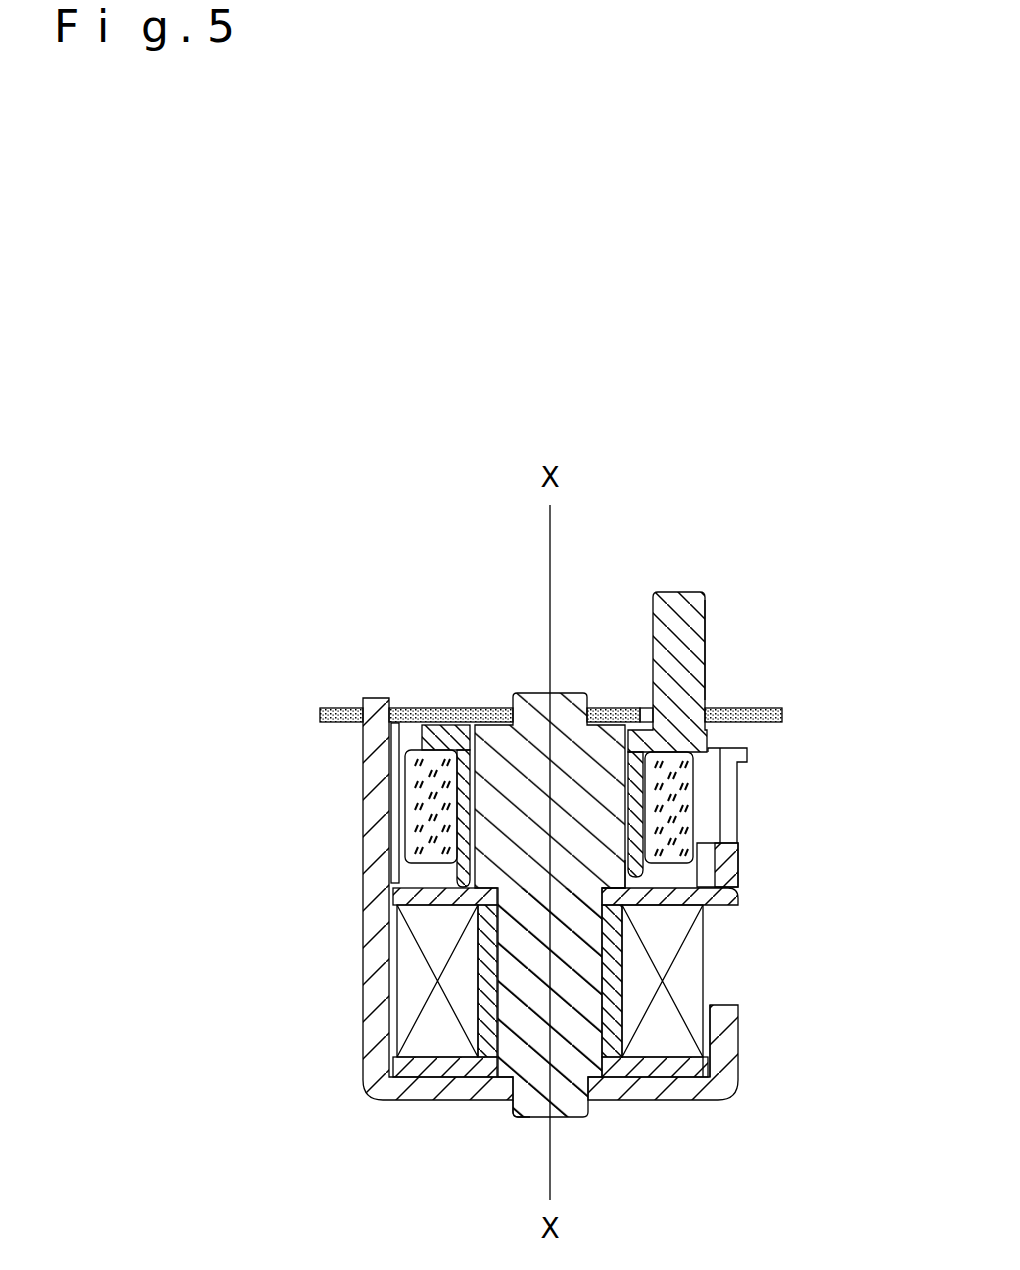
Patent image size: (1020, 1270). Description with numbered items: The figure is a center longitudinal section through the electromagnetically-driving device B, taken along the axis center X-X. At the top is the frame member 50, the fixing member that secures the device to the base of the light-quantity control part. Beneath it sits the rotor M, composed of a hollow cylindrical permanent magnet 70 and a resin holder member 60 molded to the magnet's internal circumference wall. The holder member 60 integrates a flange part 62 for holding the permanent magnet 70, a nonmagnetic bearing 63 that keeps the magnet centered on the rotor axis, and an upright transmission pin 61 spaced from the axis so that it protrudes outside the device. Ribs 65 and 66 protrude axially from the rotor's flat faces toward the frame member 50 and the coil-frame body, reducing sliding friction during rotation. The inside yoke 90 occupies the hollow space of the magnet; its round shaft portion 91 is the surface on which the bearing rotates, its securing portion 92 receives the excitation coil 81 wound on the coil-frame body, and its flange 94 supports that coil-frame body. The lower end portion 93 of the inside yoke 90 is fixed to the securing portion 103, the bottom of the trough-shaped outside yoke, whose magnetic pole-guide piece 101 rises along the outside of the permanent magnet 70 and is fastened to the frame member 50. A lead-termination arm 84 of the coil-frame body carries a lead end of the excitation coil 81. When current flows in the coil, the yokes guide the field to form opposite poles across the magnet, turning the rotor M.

The frame member 50 is at (330, 706).
The holder member 60 is at (688, 592).
The transmission pin 61 is at (694, 655).
The flange part 62 is at (425, 730).
The bearing 63 is at (455, 786).
The rib 65 is at (443, 728).
The rib 66 is at (455, 879).
The permanent magnet 70 is at (418, 813).
The excitation coil 81 is at (700, 975).
The lead-termination arm 84 is at (742, 800).
The inside yoke 90 is at (513, 1113).
The shaft portion 91 is at (562, 726).
The securing portion 92 is at (520, 990).
The lower end portion 93 is at (569, 1105).
The flange 94 is at (598, 877).
The magnetic pole-guide piece 101 is at (362, 985).
The securing portion 103 is at (592, 1092).
The rotor M is at (712, 678).
The electromagnetically-driving device B is at (645, 493).